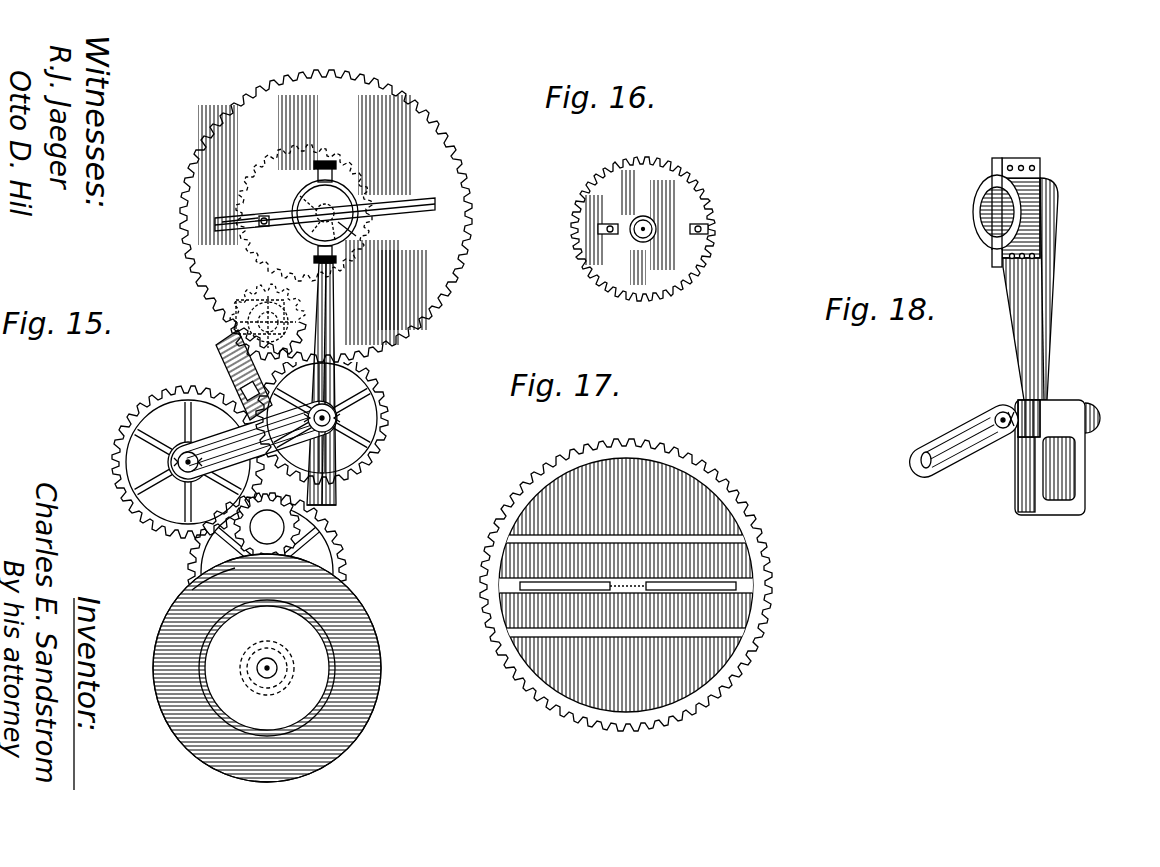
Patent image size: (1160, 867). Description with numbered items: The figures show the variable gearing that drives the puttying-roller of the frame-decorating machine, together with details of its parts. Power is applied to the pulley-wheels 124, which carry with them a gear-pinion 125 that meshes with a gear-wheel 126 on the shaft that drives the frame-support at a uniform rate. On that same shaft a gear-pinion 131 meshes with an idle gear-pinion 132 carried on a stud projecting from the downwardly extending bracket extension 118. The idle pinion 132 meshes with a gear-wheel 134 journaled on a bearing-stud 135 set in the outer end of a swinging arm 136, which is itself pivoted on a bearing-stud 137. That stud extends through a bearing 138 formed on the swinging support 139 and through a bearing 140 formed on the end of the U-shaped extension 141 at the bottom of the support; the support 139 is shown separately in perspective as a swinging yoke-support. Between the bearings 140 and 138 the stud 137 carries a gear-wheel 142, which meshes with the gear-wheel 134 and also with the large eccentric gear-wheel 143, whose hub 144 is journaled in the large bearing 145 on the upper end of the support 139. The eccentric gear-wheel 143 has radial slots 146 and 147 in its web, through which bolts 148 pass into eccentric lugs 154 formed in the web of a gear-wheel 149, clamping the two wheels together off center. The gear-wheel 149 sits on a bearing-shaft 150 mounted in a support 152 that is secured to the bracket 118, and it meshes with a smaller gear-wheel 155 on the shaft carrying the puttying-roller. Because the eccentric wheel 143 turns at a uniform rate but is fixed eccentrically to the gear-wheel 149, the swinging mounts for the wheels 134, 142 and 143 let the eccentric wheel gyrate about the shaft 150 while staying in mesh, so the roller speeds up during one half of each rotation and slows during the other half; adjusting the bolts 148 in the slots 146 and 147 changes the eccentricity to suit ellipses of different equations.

In FIG. 15, the extension 118 is at (338, 492).
In FIG. 15, the pulley-wheels 124 is at (378, 690).
In FIG. 15, the gear-pinion 125 is at (278, 676).
In FIG. 15, the gear-wheel 126 is at (318, 542).
In FIG. 15, the gear-pinion 131 is at (192, 591).
In FIG. 15, the idle gear-pinion 132 is at (300, 526).
In FIG. 15, the gear-wheel 134 is at (118, 490).
In FIG. 15, the bearing-stud 135 is at (186, 476).
In FIG. 15, the swinging arm 136 is at (228, 440).
In FIG. 18, the swinging arm 136 is at (962, 432).
In FIG. 15, the bearing-stud 137 is at (336, 420).
In FIG. 18, the bearing-stud 137 is at (1000, 412).
In FIG. 18, the bearing 138 is at (1040, 406).
In FIG. 15, the swinging support 139 is at (338, 330).
In FIG. 18, the swinging support 139 is at (1042, 352).
In FIG. 18, the bearing 140 is at (1086, 418).
In FIG. 18, the U-shaped extension 141 is at (1065, 506).
In FIG. 15, the gear-wheel 142 is at (384, 410).
In FIG. 15, the eccentric gear-wheel 143 is at (425, 280).
In FIG. 17, the eccentric gear-wheel 143 is at (722, 494).
In FIG. 15, the hub 144 is at (356, 222).
In FIG. 15, the large bearing 145 is at (352, 198).
In FIG. 18, the large bearing 145 is at (976, 212).
In FIG. 15, the radial slot 146 is at (240, 218).
In FIG. 17, the radial slot 146 is at (715, 590).
In FIG. 15, the radial slot 147 is at (425, 192).
In FIG. 17, the radial slot 147 is at (542, 586).
In FIG. 15, the bolts 148 is at (264, 228).
In FIG. 15, the gear-wheel 149 is at (265, 172).
In FIG. 16, the gear-wheel 149 is at (598, 182).
In FIG. 15, the bearing-shaft 150 is at (308, 184).
In FIG. 15, the support 152 is at (208, 376).
In FIG. 16, the eccentric lugs 154 is at (612, 212).
In FIG. 15, the smaller gear-wheel 155 is at (202, 300).